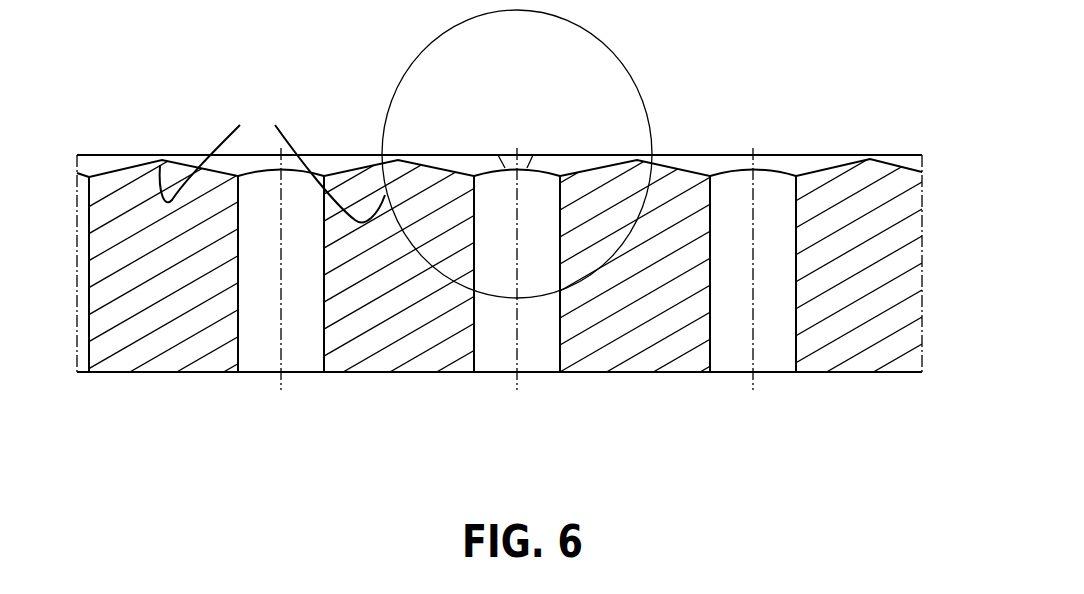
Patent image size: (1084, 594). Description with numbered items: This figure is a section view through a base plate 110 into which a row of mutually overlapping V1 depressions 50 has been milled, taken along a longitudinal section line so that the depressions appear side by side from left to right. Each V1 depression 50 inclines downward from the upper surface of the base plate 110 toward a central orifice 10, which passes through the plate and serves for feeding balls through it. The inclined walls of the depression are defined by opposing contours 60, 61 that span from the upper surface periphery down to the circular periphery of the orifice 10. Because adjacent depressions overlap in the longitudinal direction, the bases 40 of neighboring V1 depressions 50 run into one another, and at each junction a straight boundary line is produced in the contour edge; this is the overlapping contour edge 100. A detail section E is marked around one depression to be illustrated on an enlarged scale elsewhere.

The orifice 10 is at (499, 244).
The base 40 is at (442, 168).
The V1 depression 50 is at (583, 160).
The opposing contour 60 is at (505, 163).
The opposing contour 61 is at (528, 167).
The overlapping contour edge 100 is at (272, 154).
The base plate 110 is at (825, 197).
The detail section E is at (517, 238).